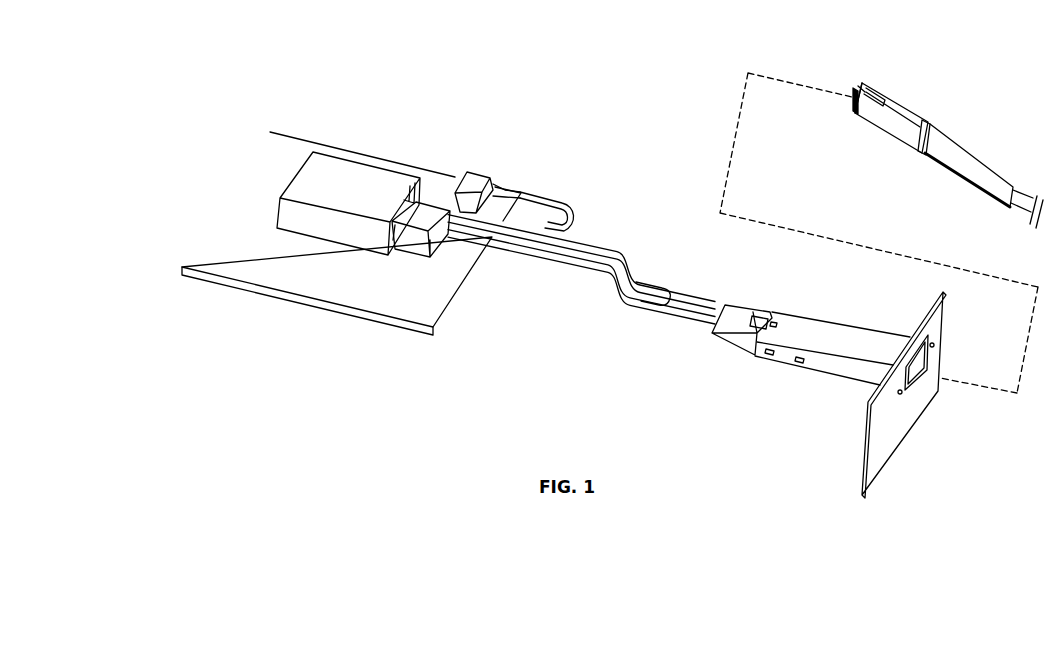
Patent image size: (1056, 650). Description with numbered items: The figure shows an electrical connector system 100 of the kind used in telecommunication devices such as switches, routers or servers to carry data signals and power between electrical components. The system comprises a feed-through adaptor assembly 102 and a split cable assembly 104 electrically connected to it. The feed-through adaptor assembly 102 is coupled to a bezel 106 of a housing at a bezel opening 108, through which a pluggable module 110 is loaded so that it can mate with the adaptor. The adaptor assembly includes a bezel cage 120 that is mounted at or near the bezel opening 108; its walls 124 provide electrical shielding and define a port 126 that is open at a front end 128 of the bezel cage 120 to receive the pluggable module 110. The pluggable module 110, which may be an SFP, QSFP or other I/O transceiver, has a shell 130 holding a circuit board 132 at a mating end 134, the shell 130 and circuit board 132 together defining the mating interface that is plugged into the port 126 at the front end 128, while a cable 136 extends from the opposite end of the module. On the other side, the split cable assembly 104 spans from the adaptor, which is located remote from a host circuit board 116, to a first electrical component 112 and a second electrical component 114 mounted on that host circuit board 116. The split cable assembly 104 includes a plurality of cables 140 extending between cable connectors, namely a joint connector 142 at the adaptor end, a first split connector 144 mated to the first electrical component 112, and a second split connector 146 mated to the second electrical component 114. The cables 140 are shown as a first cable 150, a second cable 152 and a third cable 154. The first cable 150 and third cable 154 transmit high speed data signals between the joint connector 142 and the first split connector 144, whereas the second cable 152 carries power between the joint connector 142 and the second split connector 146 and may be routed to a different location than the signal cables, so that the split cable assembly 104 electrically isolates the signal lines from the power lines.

The electrical connector system 100 is at (659, 98).
The feed-through adaptor assembly 102 is at (806, 383).
The split cable assembly 104 is at (620, 331).
The bezel 106 is at (878, 456).
The bezel opening 108 is at (911, 390).
The pluggable module 110 is at (929, 131).
The first electrical component 112 is at (341, 150).
The second electrical component 114 is at (480, 167).
The host circuit board 116 is at (436, 306).
The bezel cage 120 is at (818, 329).
The walls 124 is at (852, 341).
The port 126 is at (918, 372).
The front end 128 is at (925, 359).
The shell 130 is at (908, 120).
The circuit board 132 is at (853, 111).
The mating end 134 is at (851, 83).
The cable 136 is at (1022, 197).
The cables 140 is at (581, 264).
The joint connector 142 is at (745, 313).
The first split connector 144 is at (418, 234).
The second split connector 146 is at (500, 187).
The first cable 150 is at (657, 311).
The second cable 152 is at (569, 214).
The third cable 154 is at (590, 246).